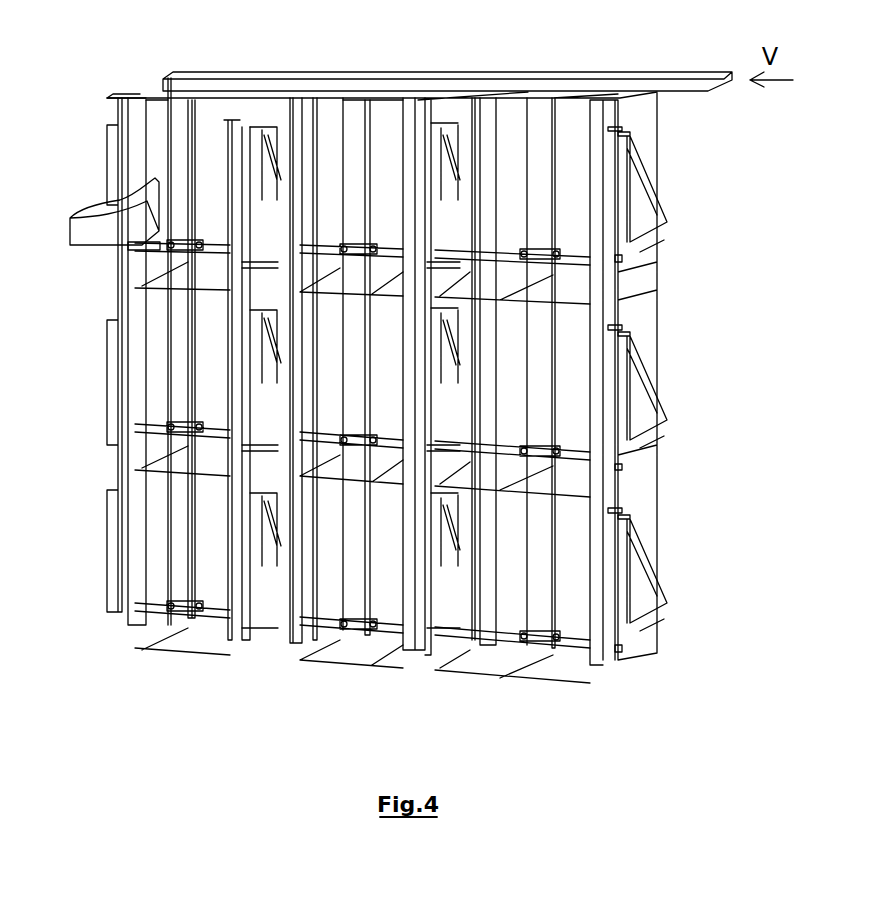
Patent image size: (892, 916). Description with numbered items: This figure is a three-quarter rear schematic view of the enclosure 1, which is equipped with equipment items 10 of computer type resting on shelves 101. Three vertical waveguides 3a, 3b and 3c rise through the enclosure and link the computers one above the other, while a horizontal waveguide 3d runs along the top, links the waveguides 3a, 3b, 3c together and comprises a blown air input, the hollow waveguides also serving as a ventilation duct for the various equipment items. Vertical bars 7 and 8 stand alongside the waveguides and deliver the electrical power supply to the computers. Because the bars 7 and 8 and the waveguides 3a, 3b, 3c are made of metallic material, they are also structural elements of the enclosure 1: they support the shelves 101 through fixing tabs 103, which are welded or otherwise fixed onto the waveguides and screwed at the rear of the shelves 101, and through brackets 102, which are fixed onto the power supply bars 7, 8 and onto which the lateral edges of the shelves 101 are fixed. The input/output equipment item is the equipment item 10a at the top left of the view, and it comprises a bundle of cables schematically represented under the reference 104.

The enclosure 1 is at (394, 406).
The vertical waveguide 3a is at (540, 643).
The vertical waveguide 3b is at (353, 640).
The vertical waveguide 3c is at (178, 613).
The horizontal waveguide 3d is at (382, 76).
The vertical bar 7 is at (122, 612).
The vertical bar 8 is at (232, 640).
The equipment item 10 is at (153, 321).
The input/output equipment item 10a is at (152, 93).
The shelf 101 is at (150, 246).
The bracket 102 is at (668, 242).
The fixing tab 103 is at (197, 241).
The bundle of cables 104 is at (92, 208).